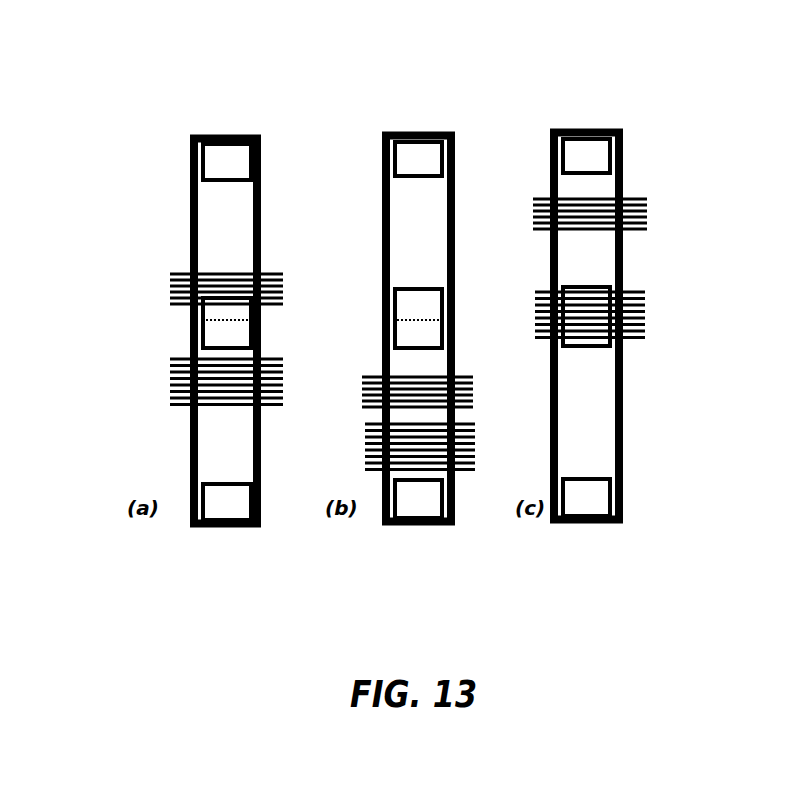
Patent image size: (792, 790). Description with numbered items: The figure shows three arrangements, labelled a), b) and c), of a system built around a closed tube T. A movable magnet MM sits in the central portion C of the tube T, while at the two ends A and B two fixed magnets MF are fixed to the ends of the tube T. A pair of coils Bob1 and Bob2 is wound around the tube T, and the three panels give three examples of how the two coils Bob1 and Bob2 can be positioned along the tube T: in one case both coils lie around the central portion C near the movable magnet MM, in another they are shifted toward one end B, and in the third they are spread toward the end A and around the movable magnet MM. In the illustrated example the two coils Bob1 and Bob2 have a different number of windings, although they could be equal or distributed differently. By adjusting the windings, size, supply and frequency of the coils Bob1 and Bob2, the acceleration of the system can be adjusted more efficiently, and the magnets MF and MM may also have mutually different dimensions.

The tube end A is at (228, 132).
The tube end B is at (223, 529).
The central portion C is at (267, 318).
The closed tube T is at (217, 210).
The fixed magnet MF is at (234, 165).
The movable magnet MM is at (212, 340).
The first coil Bob1 is at (172, 278).
The second coil Bob2 is at (185, 385).